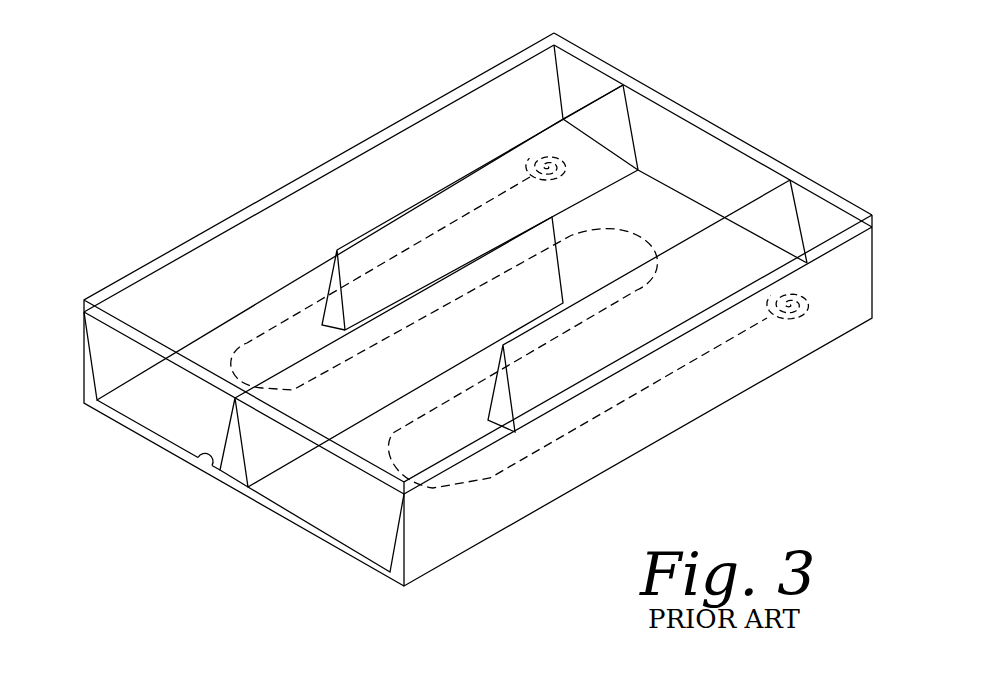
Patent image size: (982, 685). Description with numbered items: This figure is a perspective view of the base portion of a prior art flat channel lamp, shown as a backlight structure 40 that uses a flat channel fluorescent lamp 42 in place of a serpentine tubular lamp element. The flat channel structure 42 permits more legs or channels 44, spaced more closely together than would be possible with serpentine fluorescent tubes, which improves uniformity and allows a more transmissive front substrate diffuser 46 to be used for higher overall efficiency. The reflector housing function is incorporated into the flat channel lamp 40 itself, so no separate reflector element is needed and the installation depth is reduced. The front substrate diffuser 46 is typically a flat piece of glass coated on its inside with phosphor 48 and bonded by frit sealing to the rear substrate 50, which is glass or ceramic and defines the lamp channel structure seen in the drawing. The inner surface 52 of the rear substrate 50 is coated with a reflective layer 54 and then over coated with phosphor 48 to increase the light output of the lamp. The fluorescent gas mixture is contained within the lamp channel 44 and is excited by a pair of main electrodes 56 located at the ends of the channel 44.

The backlight structure 40 is at (420, 82).
The flat channel fluorescent lamp 42 is at (682, 223).
The channels 44 is at (660, 203).
The front substrate diffuser 46 is at (212, 273).
The phosphor 48 is at (617, 167).
The rear substrate 50 is at (480, 515).
The inner surface 52 is at (178, 450).
The reflective layer 54 is at (212, 463).
The main electrodes 56 is at (532, 152).